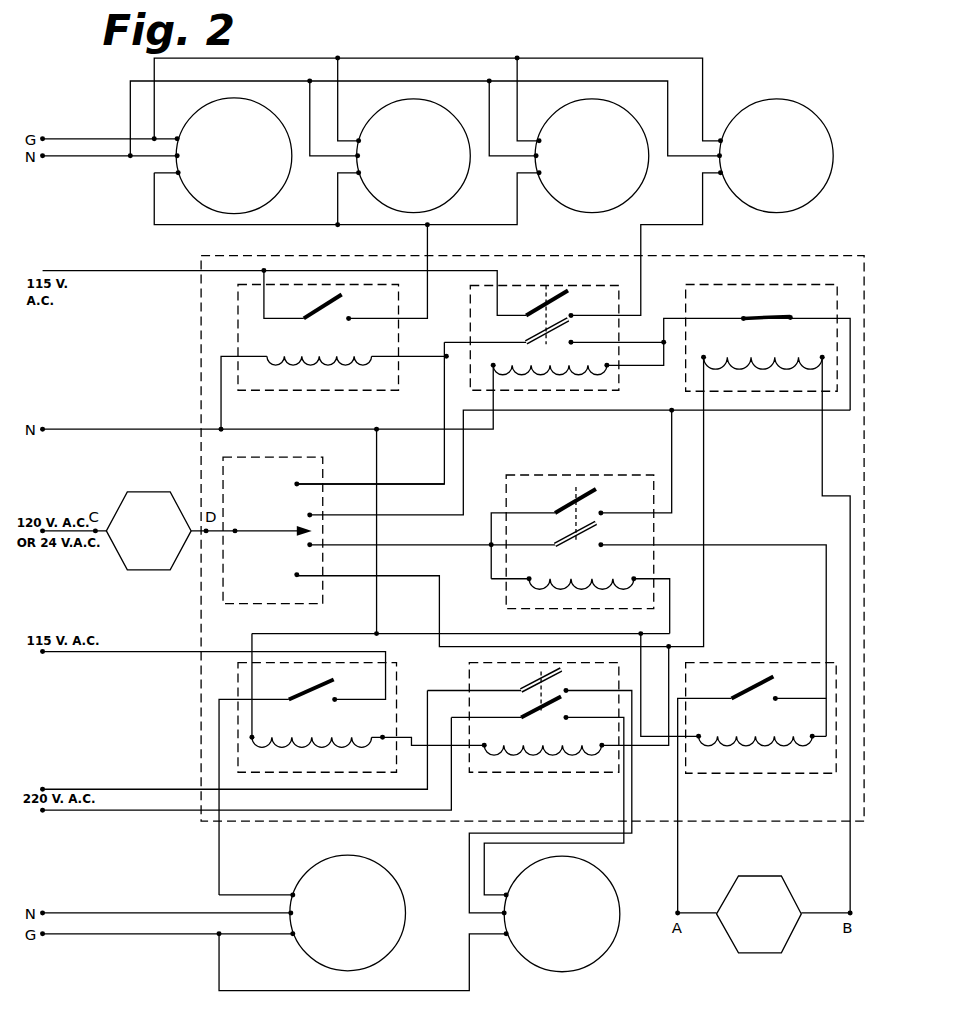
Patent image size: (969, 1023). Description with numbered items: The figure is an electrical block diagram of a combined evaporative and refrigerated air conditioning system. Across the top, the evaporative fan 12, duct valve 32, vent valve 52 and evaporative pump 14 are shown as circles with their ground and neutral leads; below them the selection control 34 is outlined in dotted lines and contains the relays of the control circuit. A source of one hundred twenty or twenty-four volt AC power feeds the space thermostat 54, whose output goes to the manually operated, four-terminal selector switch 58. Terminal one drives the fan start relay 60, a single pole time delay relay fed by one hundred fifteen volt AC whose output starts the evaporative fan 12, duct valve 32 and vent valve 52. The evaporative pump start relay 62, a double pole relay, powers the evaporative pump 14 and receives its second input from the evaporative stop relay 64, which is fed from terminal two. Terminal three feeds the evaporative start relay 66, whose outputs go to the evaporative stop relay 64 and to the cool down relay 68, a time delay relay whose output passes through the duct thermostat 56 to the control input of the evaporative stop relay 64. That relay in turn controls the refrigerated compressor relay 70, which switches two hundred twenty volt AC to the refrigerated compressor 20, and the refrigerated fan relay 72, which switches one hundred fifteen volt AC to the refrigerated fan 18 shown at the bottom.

The evaporative fan 12 is at (263, 110).
The duct valve 32 is at (447, 112).
The vent valve 52 is at (622, 112).
The evaporative pump 14 is at (799, 105).
The selection control 34 is at (199, 315).
The fan start relay 60 is at (391, 381).
The evaporative pump start relay 62 is at (613, 377).
The evaporative stop relay 64 is at (812, 283).
The selector switch 58 is at (325, 463).
The space thermostat 54 is at (147, 490).
The evaporative start relay 66 is at (624, 473).
The cool down relay 68 is at (760, 661).
The refrigerated fan relay 72 is at (396, 673).
The refrigerated compressor relay 70 is at (566, 770).
The refrigerated fan 18 is at (393, 884).
The refrigerated compressor 20 is at (610, 892).
The duct thermostat 56 is at (789, 893).